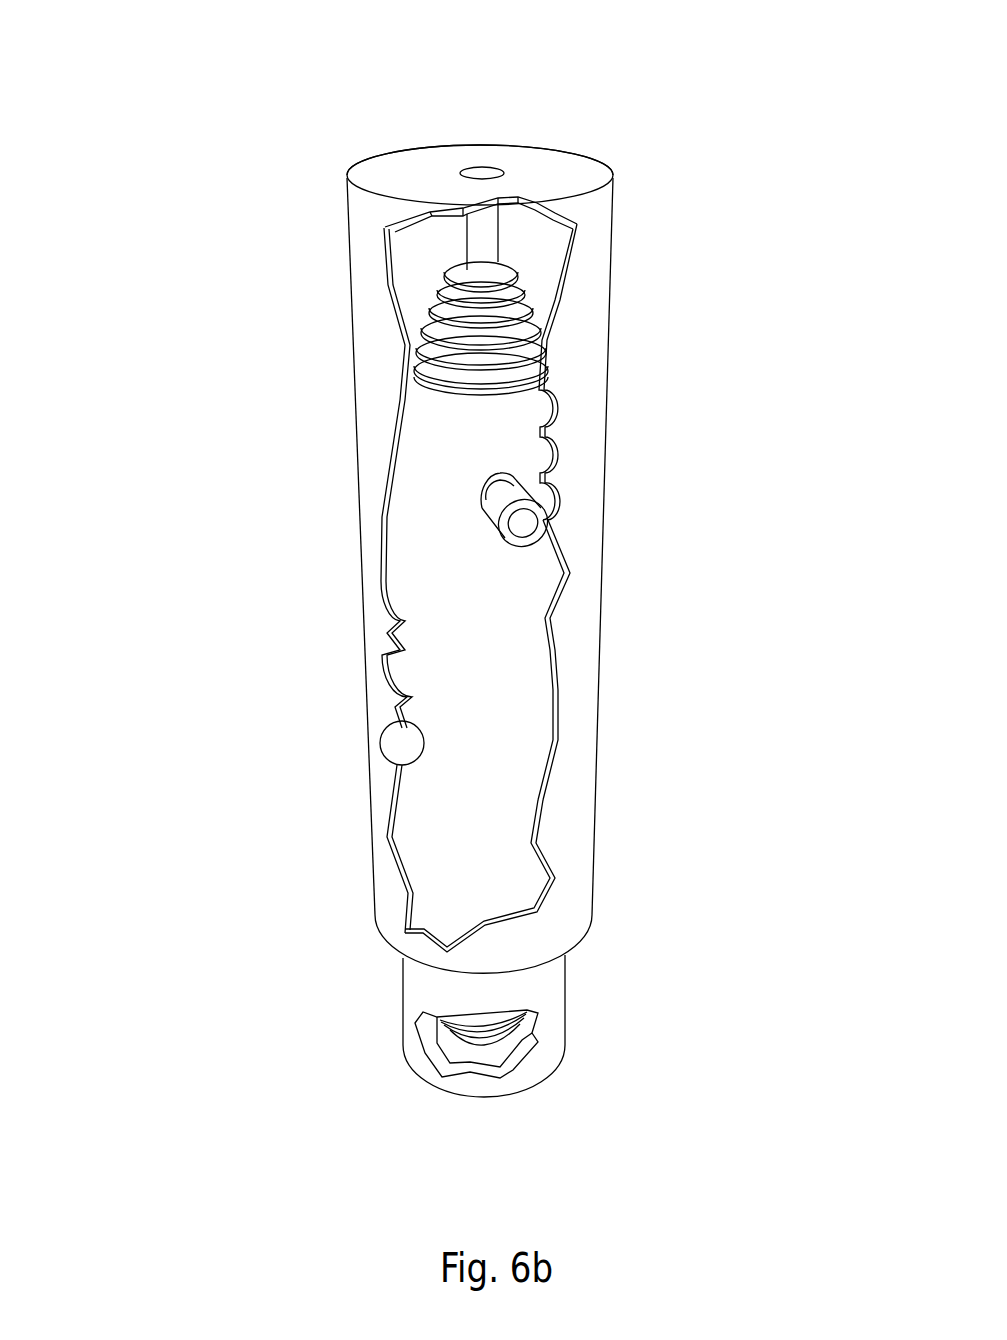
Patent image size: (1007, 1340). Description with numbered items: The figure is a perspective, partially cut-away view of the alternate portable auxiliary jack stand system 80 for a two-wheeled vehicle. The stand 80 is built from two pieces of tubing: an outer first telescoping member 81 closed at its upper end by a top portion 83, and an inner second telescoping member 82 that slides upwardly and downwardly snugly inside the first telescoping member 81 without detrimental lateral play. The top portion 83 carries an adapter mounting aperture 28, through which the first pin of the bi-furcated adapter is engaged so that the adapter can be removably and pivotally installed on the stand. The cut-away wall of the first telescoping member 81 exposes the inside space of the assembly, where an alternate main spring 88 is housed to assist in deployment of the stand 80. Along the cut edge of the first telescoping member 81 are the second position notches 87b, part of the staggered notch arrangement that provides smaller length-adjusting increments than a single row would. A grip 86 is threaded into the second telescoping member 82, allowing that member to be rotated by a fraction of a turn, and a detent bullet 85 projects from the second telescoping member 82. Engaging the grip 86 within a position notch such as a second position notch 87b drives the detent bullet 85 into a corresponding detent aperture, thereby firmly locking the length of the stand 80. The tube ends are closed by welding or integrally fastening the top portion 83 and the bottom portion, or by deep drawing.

The alternate auxiliary stand 80 is at (67, 134).
The adapter mounting aperture 28 is at (475, 168).
The top portion 83 is at (573, 160).
The alternate main spring 88 is at (435, 327).
The second position notches 87b is at (557, 408).
The grip 86 is at (516, 497).
The first telescoping member 81 is at (602, 560).
The detent bullet 85 is at (402, 745).
The second telescoping member 82 is at (567, 1013).